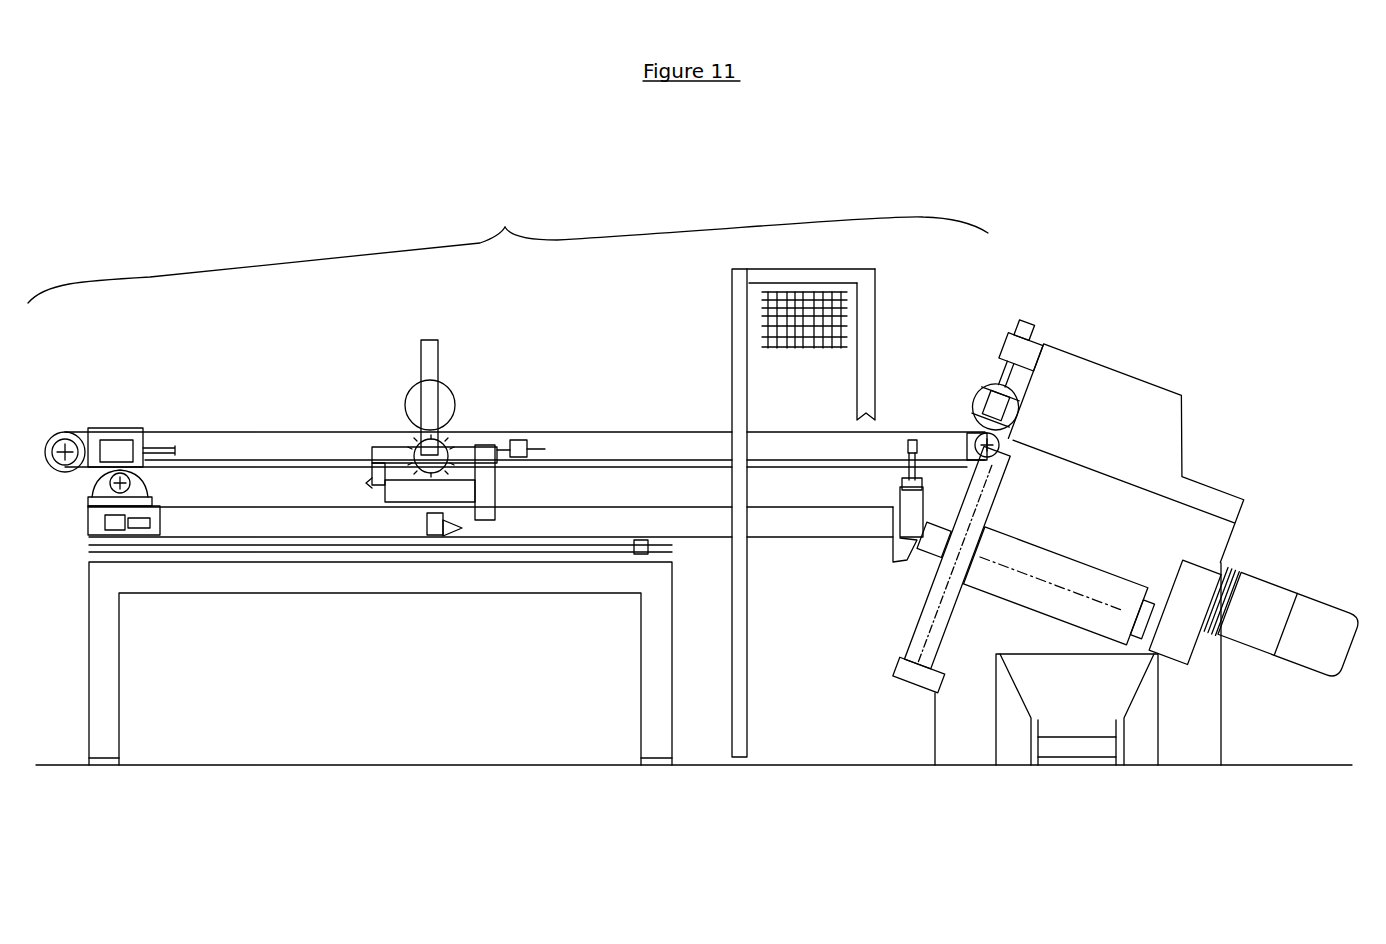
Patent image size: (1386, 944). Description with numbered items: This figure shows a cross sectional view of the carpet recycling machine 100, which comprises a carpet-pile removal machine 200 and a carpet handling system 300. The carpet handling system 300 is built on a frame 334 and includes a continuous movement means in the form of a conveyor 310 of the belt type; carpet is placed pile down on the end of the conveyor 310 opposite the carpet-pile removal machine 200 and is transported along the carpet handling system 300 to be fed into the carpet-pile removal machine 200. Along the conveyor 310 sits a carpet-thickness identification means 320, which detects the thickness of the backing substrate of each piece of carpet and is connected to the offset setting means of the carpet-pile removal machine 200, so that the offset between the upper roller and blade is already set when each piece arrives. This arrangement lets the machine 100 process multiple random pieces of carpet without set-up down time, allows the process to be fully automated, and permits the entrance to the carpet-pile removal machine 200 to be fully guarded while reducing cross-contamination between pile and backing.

The carpet recycling machine 100 is at (163, 134).
The carpet-pile removal machine 200 is at (1117, 360).
The carpet handling system 300 is at (503, 225).
The conveyor 310 is at (625, 430).
The carpet-thickness identification means 320 is at (390, 420).
The frame 334 is at (245, 586).